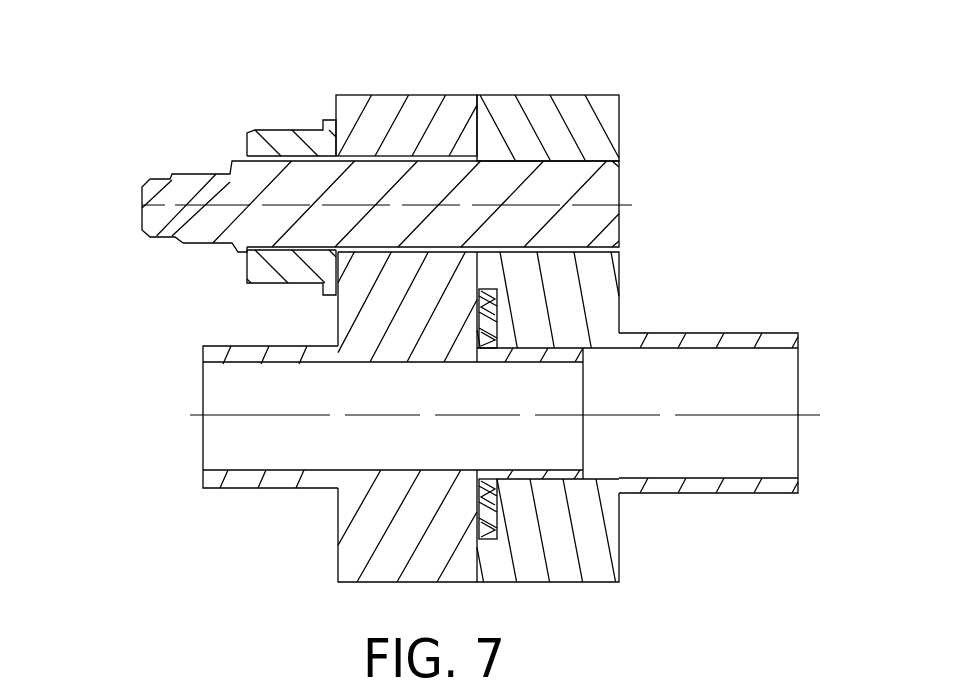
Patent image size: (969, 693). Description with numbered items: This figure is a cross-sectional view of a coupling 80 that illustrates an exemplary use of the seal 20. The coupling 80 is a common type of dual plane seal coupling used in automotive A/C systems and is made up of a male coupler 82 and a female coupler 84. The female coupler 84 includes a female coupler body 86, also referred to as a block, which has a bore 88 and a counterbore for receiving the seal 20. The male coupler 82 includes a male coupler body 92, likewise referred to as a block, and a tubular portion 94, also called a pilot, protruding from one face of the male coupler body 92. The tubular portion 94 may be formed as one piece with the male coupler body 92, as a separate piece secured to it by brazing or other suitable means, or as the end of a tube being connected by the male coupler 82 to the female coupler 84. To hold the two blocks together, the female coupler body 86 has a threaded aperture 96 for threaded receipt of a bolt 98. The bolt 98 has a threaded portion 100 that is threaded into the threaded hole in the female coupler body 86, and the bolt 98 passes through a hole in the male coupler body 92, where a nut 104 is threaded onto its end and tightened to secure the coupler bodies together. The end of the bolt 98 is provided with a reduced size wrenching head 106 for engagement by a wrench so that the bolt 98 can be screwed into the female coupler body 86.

The seal 20 is at (497, 318).
The coupling 80 is at (662, 99).
The male coupler 82 is at (345, 88).
The female coupler 84 is at (582, 86).
The female coupler body 86 is at (603, 538).
The bore 88 is at (606, 348).
The male coupler body 92 is at (338, 549).
The tubular portion 94 is at (587, 446).
The threaded aperture 96 is at (583, 163).
The bolt 98 is at (200, 157).
The threaded portion 100 is at (608, 218).
The nut 104 is at (249, 130).
The wrenching head 106 is at (145, 232).